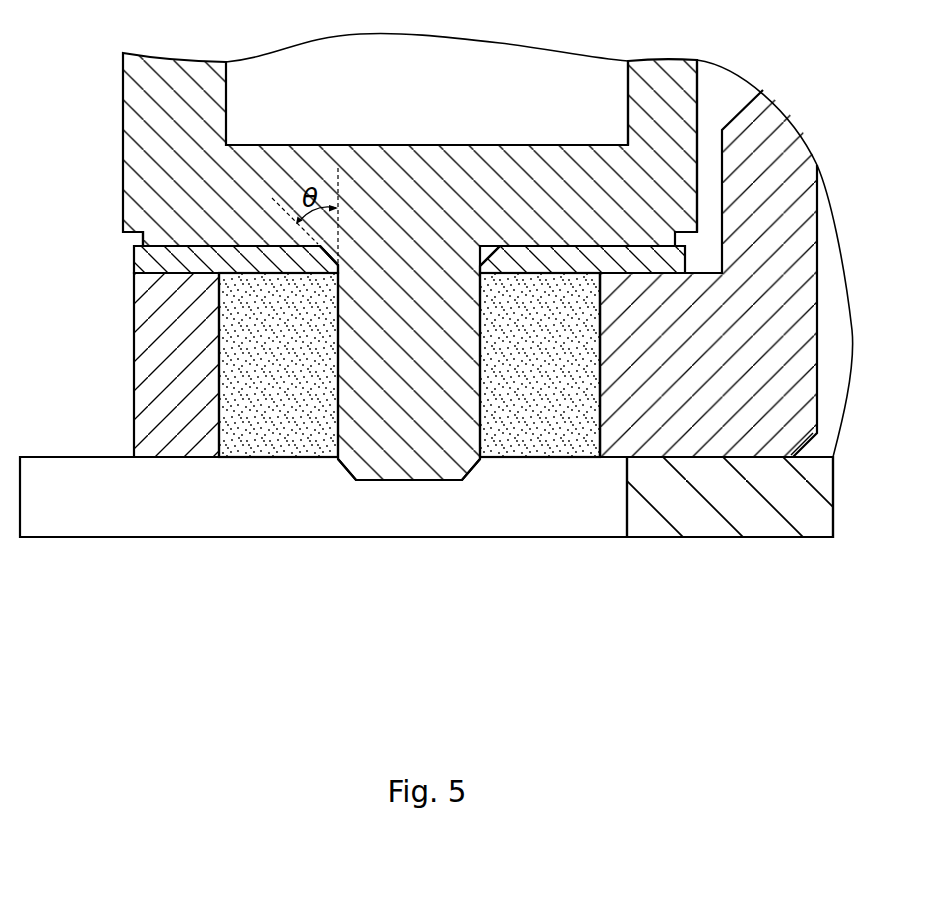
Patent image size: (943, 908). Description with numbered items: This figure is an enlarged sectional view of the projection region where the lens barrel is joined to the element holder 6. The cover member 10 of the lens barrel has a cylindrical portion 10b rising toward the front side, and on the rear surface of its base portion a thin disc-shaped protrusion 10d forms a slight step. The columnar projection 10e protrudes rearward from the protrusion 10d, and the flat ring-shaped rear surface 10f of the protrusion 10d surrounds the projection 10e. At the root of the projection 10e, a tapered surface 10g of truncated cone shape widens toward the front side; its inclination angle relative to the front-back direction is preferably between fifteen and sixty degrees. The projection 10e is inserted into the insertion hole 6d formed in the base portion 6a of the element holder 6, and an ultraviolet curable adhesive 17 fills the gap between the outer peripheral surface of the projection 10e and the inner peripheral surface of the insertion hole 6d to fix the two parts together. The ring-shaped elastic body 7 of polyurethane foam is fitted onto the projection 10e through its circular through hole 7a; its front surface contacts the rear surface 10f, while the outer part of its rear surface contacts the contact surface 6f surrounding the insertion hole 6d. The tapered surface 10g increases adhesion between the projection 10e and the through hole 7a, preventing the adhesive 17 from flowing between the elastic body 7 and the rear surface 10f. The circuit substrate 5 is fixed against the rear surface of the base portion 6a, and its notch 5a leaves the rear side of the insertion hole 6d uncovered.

The cover member 10 is at (382, 145).
The cylindrical portion 10b is at (628, 93).
The protrusion 10d is at (141, 239).
The projection 10e is at (408, 481).
The rear surface 10f is at (223, 257).
The tapered surface 10g is at (322, 252).
The elastic body 7 is at (573, 245).
The through hole 7a is at (480, 268).
The adhesive 17 is at (268, 441).
The element holder 6 is at (706, 458).
The base portion 6a is at (730, 497).
The insertion hole 6d is at (597, 396).
The contact surface 6f is at (636, 267).
The circuit substrate 5 is at (69, 540).
The notch 5a is at (626, 514).